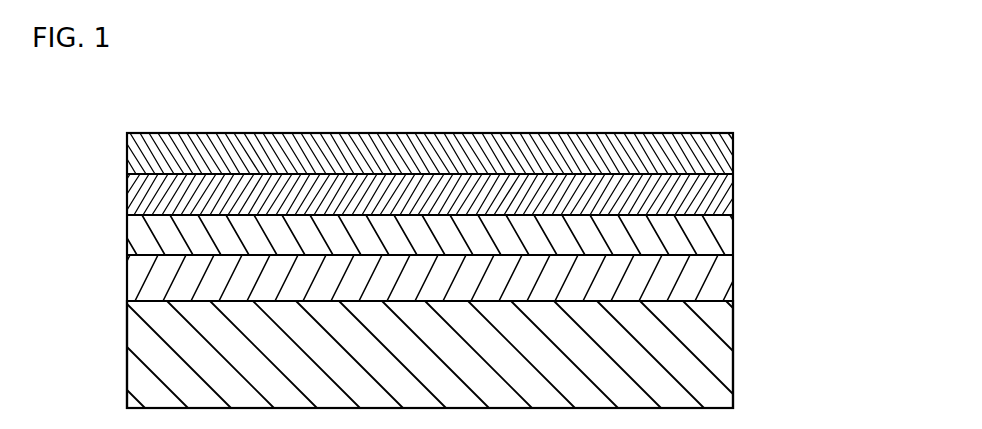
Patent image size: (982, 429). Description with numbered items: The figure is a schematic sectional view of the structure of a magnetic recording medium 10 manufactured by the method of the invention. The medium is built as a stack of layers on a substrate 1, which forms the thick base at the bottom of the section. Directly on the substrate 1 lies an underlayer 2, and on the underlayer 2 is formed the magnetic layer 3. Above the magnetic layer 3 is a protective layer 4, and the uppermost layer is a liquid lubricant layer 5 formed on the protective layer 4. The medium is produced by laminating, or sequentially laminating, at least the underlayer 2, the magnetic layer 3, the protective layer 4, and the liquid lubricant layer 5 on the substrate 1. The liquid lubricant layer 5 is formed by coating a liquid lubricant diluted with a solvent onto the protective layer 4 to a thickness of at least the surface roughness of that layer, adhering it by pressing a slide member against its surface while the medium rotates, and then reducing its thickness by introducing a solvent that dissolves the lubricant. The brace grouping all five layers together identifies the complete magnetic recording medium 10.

The magnetic recording medium 10 is at (815, 100).
The substrate 1 is at (733, 361).
The underlayer 2 is at (733, 290).
The magnetic layer 3 is at (733, 242).
The protective layer 4 is at (733, 198).
The liquid lubricant layer 5 is at (733, 152).